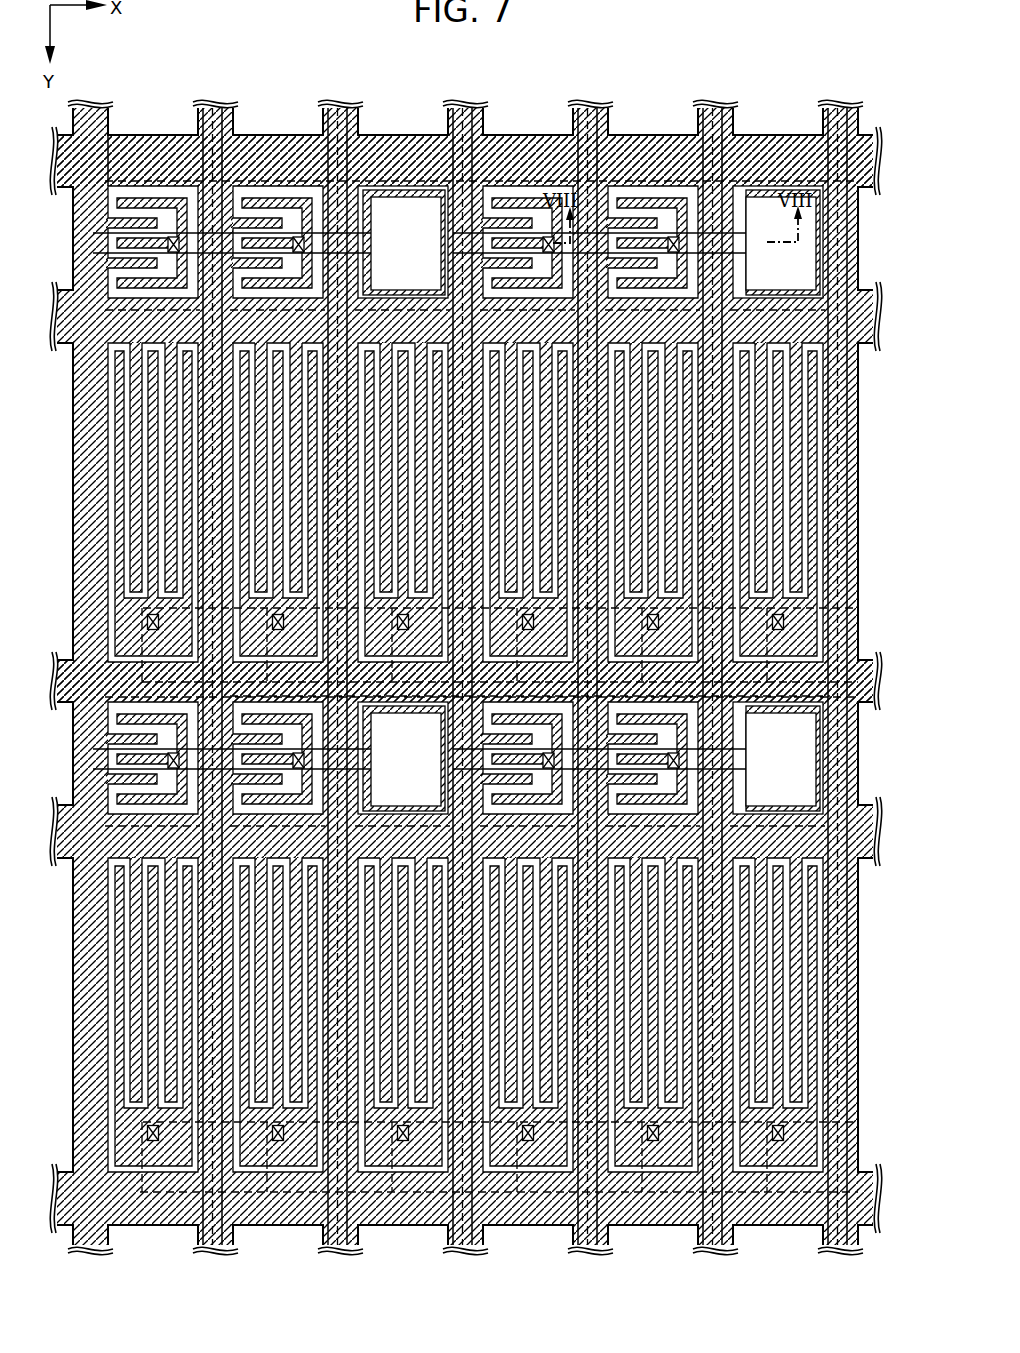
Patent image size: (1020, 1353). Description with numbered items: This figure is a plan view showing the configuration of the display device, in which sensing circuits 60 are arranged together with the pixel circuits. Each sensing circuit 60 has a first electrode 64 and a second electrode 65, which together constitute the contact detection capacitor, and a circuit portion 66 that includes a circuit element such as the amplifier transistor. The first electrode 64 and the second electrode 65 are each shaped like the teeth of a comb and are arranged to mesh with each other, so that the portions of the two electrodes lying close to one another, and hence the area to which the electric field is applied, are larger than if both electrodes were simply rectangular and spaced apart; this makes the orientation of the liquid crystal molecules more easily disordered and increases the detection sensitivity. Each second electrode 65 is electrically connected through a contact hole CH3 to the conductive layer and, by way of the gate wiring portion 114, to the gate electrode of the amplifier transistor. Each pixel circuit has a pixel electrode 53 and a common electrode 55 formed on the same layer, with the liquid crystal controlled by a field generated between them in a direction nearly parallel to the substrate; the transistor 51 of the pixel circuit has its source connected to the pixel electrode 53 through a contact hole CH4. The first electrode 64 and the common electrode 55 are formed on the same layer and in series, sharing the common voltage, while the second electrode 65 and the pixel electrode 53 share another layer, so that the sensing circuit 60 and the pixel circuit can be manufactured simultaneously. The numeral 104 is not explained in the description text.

The transistor 51 is at (862, 646).
The pixel electrode 53 is at (810, 555).
The common electrode 55 is at (802, 478).
The sensing circuit 60 is at (548, 140).
The first electrode 64 is at (620, 155).
The second electrode 65 is at (647, 200).
The circuit portion 66 is at (817, 268).
The data line 104 is at (732, 158).
The gate wiring portion 114 is at (488, 240).
The contact hole CH3 is at (675, 237).
The contact hole CH4 is at (782, 620).